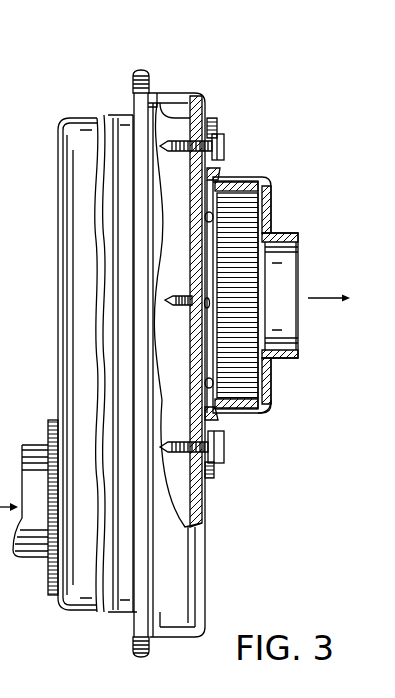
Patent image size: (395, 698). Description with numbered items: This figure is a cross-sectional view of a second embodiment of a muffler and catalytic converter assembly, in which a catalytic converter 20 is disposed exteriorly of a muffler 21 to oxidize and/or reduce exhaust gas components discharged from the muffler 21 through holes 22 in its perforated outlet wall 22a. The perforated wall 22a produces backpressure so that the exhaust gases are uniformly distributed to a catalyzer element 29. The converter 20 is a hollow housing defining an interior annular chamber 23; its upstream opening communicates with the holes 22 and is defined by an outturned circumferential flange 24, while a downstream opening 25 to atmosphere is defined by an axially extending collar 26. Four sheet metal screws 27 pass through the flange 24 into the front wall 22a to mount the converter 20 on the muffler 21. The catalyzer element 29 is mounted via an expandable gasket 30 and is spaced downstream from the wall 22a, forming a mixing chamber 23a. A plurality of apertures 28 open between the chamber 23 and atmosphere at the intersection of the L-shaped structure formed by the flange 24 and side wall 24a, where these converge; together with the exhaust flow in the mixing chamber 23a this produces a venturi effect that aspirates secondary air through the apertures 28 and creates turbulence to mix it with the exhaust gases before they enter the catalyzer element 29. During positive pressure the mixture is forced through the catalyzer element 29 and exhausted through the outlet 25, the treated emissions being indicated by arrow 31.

The catalytic converter 20 is at (303, 224).
The muffler 21 is at (73, 98).
The holes 22 is at (207, 222).
The perforated outlet wall 22a is at (190, 282).
The interior annular chamber 23 is at (258, 250).
The mixing chamber 23a is at (216, 270).
The outturned circumferential flange 24 is at (212, 120).
The side wall 24a is at (218, 170).
The downstream opening 25 is at (295, 343).
The axially extending collar 26 is at (285, 358).
The sheet metal screws 27 is at (178, 308).
The apertures 28 is at (215, 217).
The catalyzer element 29 is at (258, 407).
The expandable gasket 30 is at (253, 416).
The arrow 31 is at (325, 300).